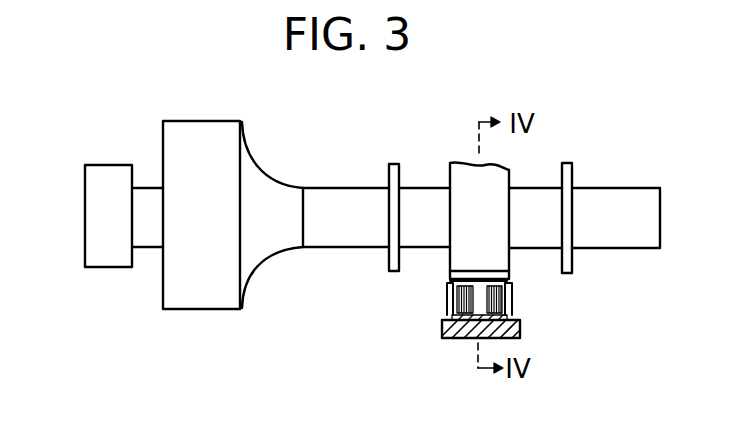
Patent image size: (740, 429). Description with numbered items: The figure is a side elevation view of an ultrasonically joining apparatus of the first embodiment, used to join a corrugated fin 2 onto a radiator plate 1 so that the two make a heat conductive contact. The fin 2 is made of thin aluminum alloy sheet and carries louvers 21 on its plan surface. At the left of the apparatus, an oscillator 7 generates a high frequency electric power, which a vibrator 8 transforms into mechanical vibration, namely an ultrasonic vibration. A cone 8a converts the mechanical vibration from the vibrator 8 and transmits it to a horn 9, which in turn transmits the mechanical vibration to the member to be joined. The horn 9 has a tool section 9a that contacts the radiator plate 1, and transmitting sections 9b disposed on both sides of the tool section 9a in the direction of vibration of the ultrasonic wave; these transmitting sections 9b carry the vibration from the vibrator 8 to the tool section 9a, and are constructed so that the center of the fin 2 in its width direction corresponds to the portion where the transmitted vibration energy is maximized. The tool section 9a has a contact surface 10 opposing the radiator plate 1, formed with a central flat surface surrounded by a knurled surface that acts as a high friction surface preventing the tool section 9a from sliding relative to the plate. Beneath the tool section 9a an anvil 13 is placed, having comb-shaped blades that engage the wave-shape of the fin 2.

The radiator plate 1 is at (507, 276).
The corrugated fin 2 is at (480, 303).
The oscillator 7 is at (108, 260).
The vibrator 8 is at (202, 300).
The cone 8a is at (257, 255).
The horn 9 is at (392, 163).
The tool section 9a is at (462, 256).
The transmitting sections 9b is at (347, 238).
The contact surface 10 is at (497, 272).
The anvil 13 is at (518, 333).
The louvers 21 is at (495, 303).